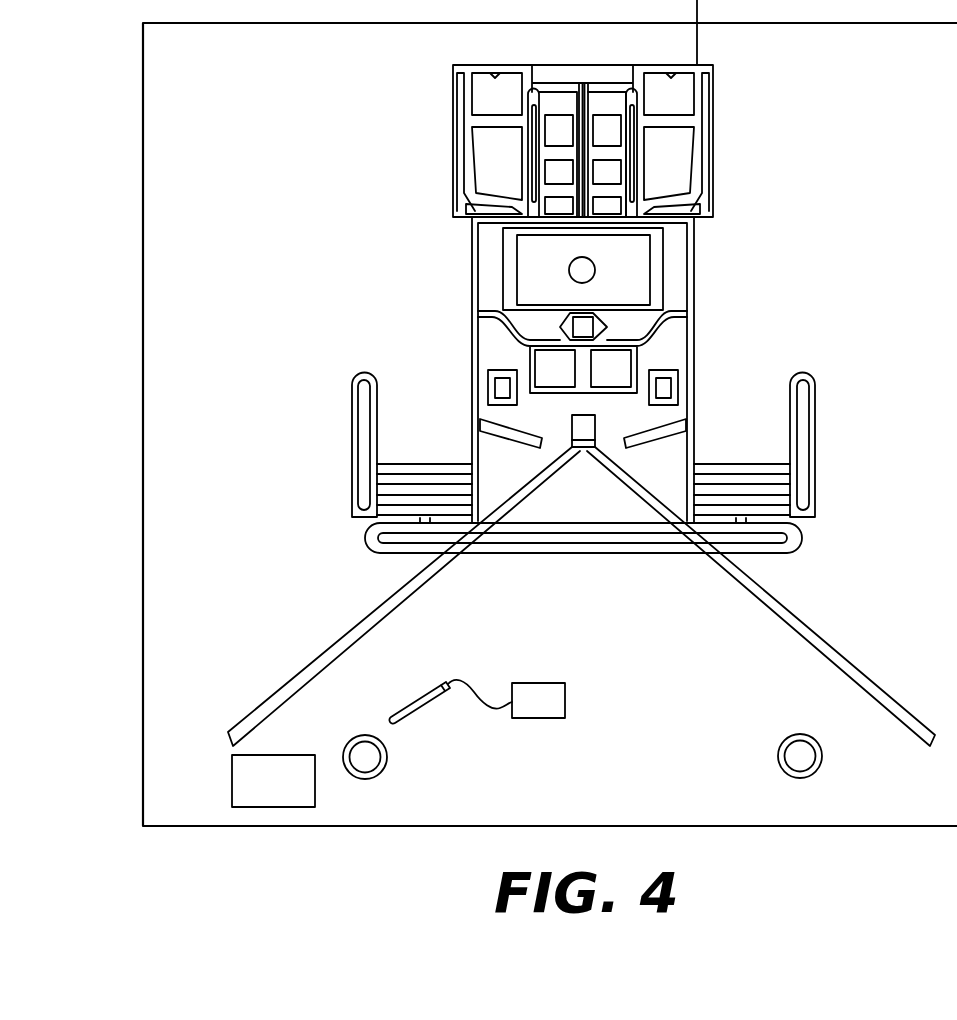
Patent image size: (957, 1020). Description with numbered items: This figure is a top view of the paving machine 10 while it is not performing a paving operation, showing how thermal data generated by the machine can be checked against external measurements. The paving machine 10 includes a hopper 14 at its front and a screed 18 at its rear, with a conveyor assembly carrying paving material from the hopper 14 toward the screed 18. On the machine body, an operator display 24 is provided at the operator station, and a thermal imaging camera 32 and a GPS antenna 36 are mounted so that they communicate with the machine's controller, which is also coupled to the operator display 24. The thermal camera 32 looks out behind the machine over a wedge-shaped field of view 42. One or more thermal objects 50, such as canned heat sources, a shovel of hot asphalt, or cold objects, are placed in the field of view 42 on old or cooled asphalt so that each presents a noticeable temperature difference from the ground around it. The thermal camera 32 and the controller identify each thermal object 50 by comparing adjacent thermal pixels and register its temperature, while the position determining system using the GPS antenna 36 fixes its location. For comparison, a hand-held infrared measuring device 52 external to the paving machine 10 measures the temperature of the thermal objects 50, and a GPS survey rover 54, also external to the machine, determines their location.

The paving machine 10 is at (356, 238).
The hopper 14 is at (482, 152).
The screed 18 is at (348, 508).
The operator display 24 is at (599, 327).
The thermal imaging camera 32 is at (572, 427).
The GPS antenna 36 is at (596, 270).
The field of view 42 is at (595, 598).
The thermal object 50 is at (388, 756).
The hand-held infrared measuring device 52 is at (436, 690).
The GPS survey rover 54 is at (285, 793).